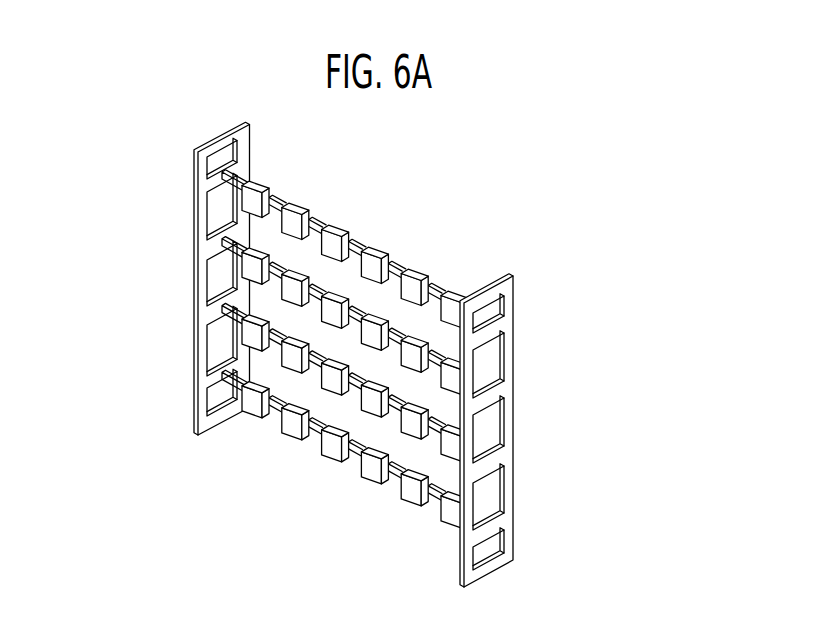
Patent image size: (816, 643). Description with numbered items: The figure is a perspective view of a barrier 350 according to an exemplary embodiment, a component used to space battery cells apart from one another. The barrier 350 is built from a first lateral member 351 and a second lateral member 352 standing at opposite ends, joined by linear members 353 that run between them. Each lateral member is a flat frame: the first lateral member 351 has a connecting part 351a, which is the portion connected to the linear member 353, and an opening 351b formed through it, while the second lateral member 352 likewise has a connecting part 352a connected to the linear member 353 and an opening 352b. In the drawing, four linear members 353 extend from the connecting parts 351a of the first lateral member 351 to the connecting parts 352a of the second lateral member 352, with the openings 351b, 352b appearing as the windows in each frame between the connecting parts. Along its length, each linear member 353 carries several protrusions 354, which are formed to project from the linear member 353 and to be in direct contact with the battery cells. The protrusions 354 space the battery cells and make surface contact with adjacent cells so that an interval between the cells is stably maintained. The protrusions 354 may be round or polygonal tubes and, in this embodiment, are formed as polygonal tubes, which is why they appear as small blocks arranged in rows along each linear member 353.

The barrier 350 is at (515, 184).
The first lateral member 351 is at (94, 186).
The connecting part 351a is at (212, 247).
The opening 351b is at (221, 287).
The second lateral member 352 is at (617, 392).
The connecting part 352a is at (500, 397).
The opening 352b is at (493, 425).
The linear member 353 is at (397, 482).
The protrusion 354 is at (418, 497).